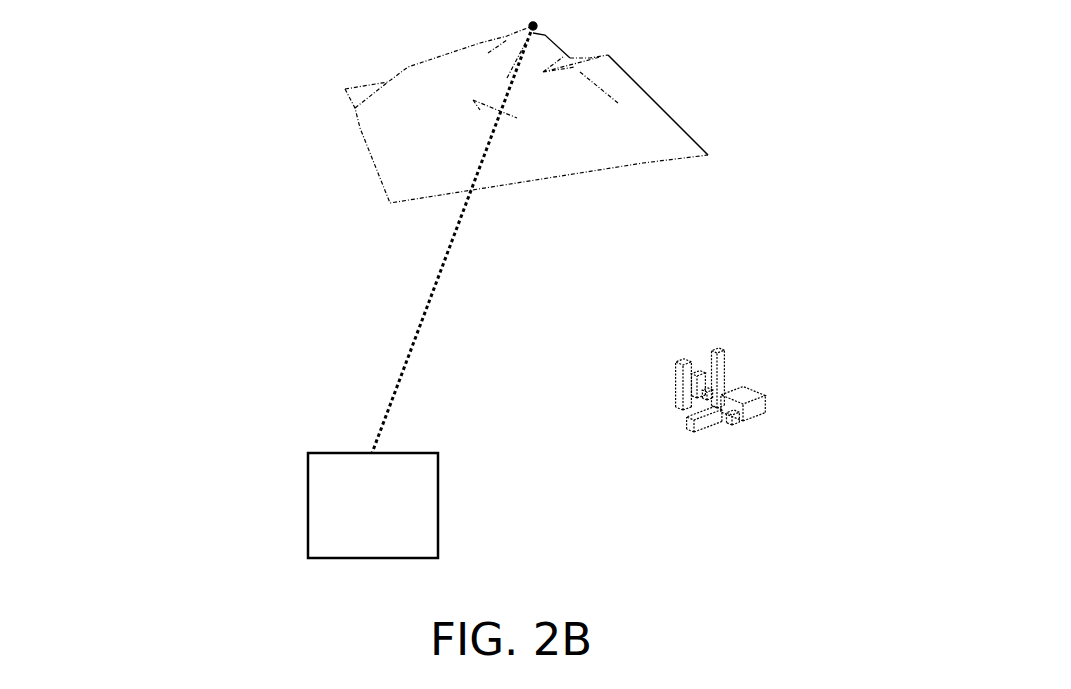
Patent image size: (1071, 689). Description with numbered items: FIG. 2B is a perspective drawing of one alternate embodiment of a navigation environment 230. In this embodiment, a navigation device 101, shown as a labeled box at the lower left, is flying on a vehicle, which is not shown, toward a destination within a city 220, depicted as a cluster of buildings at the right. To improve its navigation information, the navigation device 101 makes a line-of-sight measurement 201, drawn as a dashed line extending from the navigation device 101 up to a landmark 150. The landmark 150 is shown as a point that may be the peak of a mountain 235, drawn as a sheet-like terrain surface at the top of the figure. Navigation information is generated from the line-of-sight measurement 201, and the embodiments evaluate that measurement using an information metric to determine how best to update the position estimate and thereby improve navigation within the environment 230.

The navigation environment 230 is at (162, 116).
The mountain 235 is at (658, 133).
The landmark 150 is at (537, 29).
The line-of-sight measurement 201 is at (410, 345).
The city 220 is at (760, 407).
The navigation device 101 is at (353, 545).